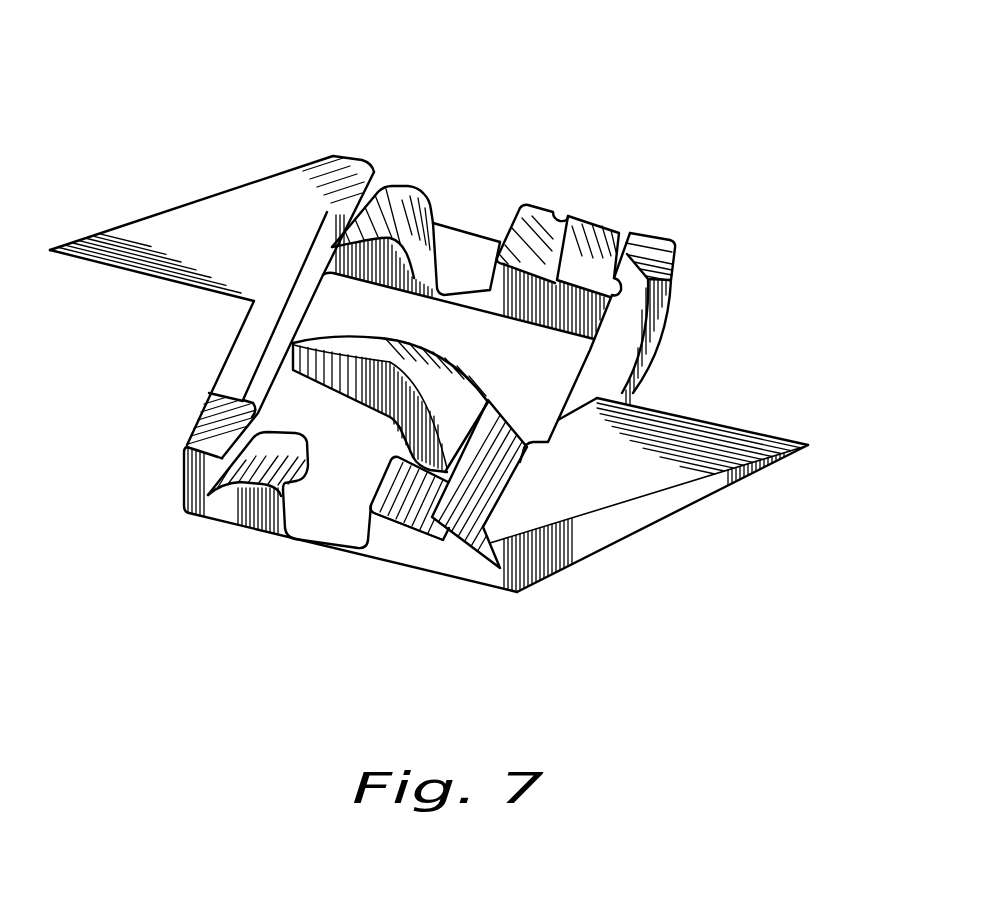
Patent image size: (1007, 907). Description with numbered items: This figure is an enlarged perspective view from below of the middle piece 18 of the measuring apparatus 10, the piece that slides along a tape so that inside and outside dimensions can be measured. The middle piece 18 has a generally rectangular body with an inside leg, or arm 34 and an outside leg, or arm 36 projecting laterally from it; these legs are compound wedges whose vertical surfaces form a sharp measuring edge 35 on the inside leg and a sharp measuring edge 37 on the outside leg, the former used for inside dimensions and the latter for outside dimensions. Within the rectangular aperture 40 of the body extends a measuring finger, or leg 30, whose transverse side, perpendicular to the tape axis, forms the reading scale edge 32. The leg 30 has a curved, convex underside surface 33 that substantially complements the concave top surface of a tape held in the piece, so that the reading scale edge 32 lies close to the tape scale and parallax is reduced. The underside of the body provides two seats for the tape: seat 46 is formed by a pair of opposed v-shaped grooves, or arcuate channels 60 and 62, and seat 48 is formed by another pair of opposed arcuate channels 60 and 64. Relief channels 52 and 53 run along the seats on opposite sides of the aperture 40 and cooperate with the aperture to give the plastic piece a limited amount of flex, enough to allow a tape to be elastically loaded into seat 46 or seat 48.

The apparatus 10 is at (693, 168).
The middle piece 18 is at (693, 230).
The measuring finger, or leg 30 is at (310, 387).
The reading scale edge 32 is at (343, 337).
The curved underside surface 33 is at (388, 338).
The inside leg, or arm 34 is at (218, 190).
The measuring edge 35 is at (157, 280).
The outside leg, or arm 36 is at (633, 500).
The measuring edge 37 is at (697, 413).
The aperture 40 is at (487, 253).
The seat 46 is at (430, 547).
The seat 48 is at (477, 570).
The relief channel 52 is at (325, 523).
The relief channel 53 is at (467, 230).
The arcuate channel 60 is at (370, 185).
The arcuate channel 62 is at (560, 240).
The arcuate channel 64 is at (607, 253).